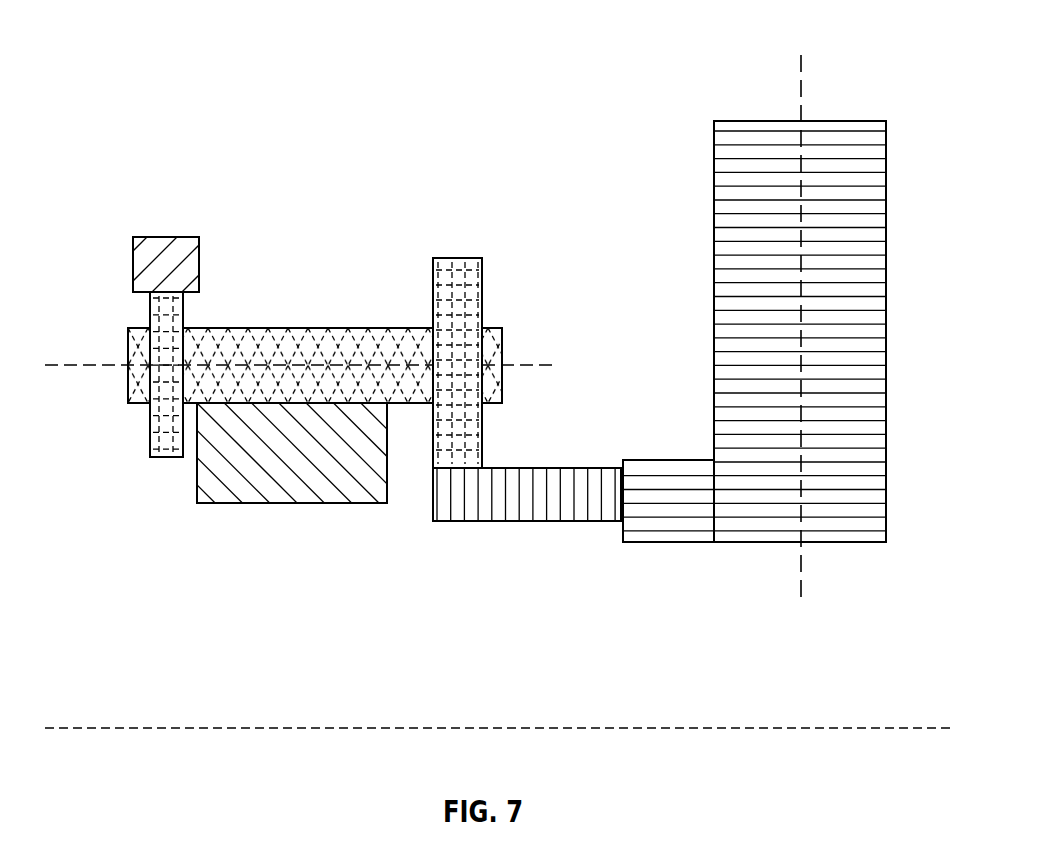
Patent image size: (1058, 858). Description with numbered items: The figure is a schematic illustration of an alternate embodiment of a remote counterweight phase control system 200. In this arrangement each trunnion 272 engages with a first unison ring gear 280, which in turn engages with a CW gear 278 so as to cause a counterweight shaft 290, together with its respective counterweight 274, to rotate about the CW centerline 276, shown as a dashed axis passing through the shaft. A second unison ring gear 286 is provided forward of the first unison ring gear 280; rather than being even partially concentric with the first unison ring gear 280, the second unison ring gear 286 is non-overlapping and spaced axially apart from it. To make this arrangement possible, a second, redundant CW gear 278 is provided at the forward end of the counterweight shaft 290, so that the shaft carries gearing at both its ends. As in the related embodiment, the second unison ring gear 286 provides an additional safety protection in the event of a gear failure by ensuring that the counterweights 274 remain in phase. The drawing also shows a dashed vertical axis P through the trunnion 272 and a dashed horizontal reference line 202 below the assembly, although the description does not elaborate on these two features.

The remote counterweight phase control system 200 is at (163, 47).
The reference plane 202 is at (871, 728).
The trunnion 272 is at (876, 452).
The counterweight 274 is at (249, 485).
The CW centerline 276 is at (110, 365).
The CW gear 278 is at (447, 295).
The first unison ring gear 280 is at (472, 513).
The second unison ring gear 286 is at (145, 263).
The counterweight shaft 290 is at (275, 335).
The pivot axis P is at (801, 80).